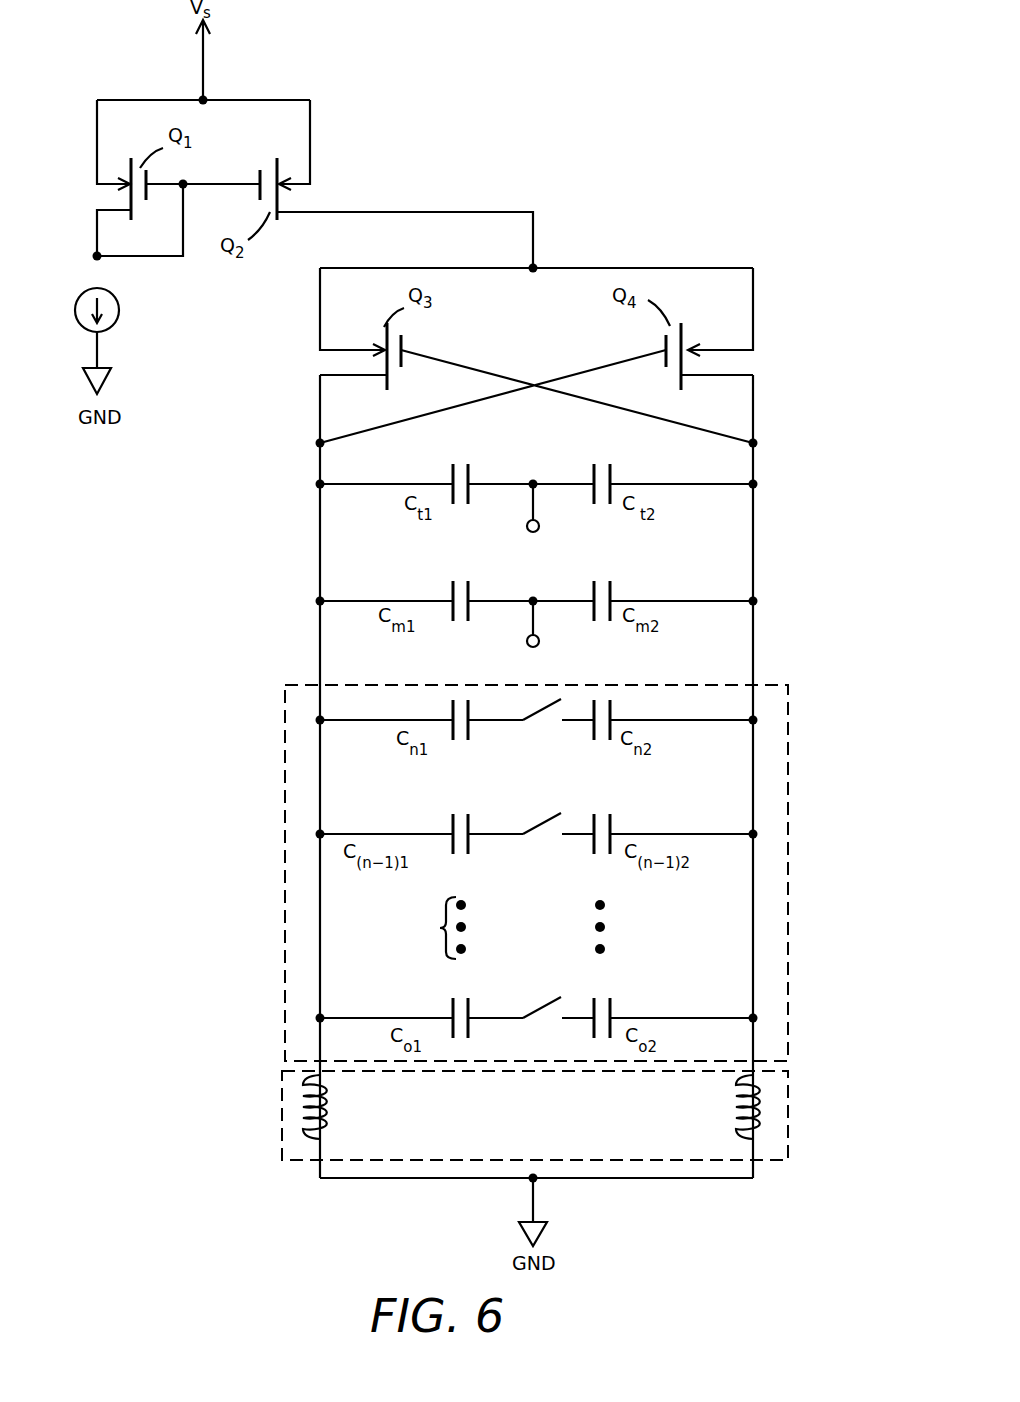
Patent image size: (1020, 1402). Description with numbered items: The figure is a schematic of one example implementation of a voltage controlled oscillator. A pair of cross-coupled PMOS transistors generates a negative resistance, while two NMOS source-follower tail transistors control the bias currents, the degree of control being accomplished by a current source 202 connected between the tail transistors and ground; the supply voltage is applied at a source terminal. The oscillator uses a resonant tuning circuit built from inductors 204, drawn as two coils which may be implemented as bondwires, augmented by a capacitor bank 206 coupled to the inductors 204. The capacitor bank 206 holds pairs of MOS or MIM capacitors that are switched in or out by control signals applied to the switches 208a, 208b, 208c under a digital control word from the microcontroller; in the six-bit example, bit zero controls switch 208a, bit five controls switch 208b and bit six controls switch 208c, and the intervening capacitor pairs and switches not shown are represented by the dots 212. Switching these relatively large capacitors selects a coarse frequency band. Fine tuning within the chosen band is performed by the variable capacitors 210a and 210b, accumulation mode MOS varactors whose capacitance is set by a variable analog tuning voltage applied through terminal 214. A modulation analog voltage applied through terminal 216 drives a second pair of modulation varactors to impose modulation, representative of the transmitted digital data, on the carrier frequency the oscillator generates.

The current source 202 is at (118, 305).
The inductors 204 is at (802, 1085).
The capacitor bank 206 is at (802, 781).
The switch 208a is at (553, 1008).
The switch 208b is at (555, 836).
The switch 208c is at (535, 724).
The variable capacitor 210a is at (462, 470).
The variable capacitor 210b is at (600, 470).
The dots 212 is at (440, 930).
The terminal 214 is at (537, 532).
The terminal 216 is at (537, 647).